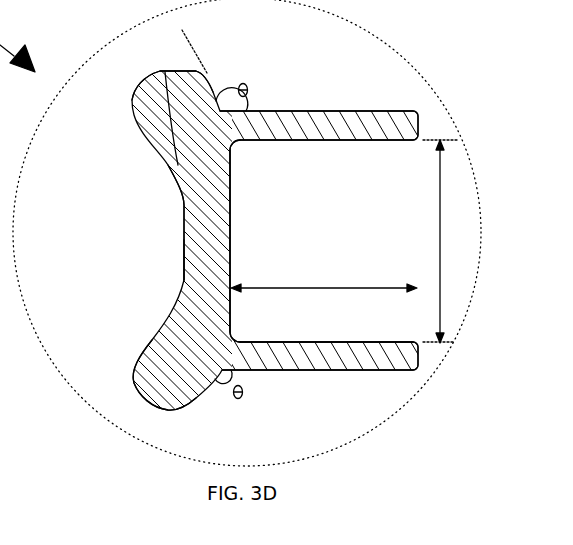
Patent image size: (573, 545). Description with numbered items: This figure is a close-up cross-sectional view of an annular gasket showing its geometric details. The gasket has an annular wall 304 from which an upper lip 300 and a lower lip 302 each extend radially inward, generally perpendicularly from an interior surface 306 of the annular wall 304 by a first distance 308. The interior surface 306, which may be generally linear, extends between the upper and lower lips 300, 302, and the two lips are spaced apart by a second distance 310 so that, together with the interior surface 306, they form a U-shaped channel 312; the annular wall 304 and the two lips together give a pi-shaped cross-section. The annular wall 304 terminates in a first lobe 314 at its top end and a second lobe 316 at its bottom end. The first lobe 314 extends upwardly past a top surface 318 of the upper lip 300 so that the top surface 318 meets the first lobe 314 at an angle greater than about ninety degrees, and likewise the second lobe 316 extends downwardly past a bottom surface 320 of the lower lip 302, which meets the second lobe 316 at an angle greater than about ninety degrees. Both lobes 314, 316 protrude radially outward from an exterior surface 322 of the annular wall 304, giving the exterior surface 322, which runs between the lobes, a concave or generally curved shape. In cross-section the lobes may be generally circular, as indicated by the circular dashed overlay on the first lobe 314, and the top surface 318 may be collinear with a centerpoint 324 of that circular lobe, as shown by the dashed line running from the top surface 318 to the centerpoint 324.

The upper lip 300 is at (342, 111).
The lower lip 302 is at (355, 371).
The annular wall 304 is at (202, 203).
The interior surface 306 is at (231, 240).
The first distance 308 is at (293, 289).
The second distance 310 is at (440, 238).
The U-shaped channel 312 is at (352, 194).
The first lobe 314 is at (132, 100).
The second lobe 316 is at (142, 382).
The top surface 318 is at (293, 111).
The bottom surface 320 is at (293, 371).
The exterior surface 322 is at (190, 255).
The centerpoint 324 is at (165, 72).